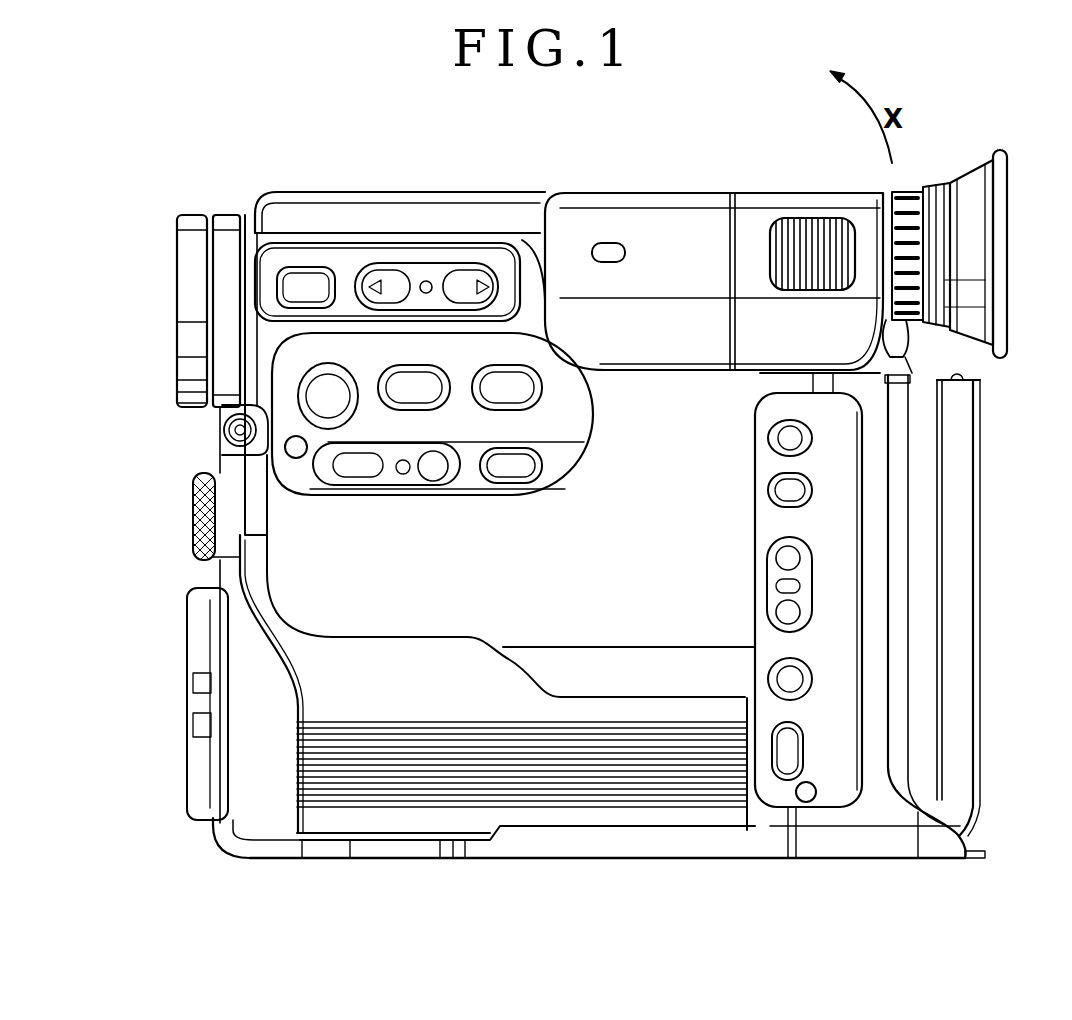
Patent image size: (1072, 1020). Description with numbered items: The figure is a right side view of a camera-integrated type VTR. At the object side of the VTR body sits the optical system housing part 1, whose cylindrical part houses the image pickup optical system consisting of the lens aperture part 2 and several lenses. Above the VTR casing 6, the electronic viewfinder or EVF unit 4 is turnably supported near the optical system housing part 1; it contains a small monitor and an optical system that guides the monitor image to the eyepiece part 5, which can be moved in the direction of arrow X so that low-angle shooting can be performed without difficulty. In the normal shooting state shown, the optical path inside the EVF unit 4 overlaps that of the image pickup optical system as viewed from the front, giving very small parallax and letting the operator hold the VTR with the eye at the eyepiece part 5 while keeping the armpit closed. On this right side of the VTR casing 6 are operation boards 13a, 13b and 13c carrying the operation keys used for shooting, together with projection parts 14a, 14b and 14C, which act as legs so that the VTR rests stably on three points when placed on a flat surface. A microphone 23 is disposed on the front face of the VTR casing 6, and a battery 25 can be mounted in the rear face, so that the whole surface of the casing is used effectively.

The optical system housing part 1 is at (462, 190).
The lens aperture part 2 is at (172, 415).
The EVF unit 4 is at (823, 193).
The eyepiece part 5 is at (970, 258).
The VTR casing 6 is at (535, 585).
The operation board 13a is at (347, 263).
The operation board 13b is at (573, 422).
The operation board 13c is at (837, 520).
The projection part 14a is at (608, 250).
The projection part 14b is at (292, 460).
The projection part 14C is at (807, 803).
The microphone 23 is at (190, 530).
The battery 25 is at (980, 602).